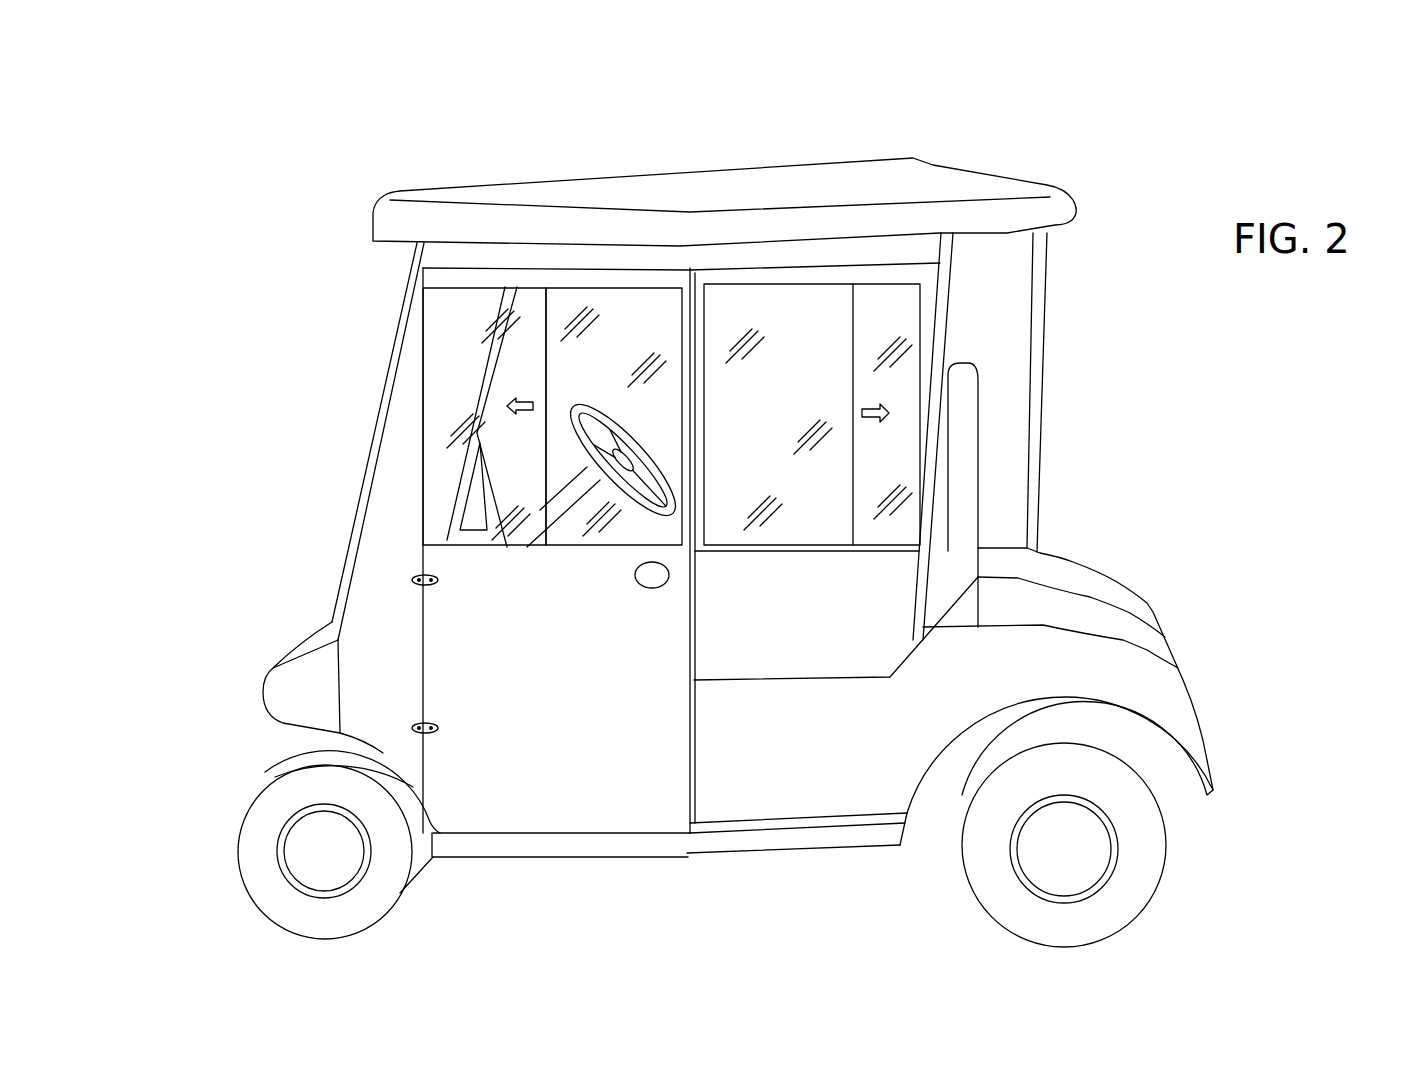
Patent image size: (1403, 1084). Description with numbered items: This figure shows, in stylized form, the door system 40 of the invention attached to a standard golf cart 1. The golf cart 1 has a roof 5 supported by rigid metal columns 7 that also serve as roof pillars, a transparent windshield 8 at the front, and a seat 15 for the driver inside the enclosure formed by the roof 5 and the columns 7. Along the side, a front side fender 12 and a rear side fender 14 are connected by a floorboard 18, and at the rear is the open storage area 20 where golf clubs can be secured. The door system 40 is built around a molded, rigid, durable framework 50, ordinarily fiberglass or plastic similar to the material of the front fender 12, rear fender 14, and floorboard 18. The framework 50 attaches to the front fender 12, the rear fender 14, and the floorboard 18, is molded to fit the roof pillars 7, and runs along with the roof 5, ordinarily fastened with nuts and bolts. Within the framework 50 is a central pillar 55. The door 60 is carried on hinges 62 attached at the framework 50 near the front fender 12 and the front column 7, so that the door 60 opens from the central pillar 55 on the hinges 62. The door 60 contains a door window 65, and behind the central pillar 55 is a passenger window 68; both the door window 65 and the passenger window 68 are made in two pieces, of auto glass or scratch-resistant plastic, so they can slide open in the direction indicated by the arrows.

The golf cart 1 is at (355, 188).
The roof 5 is at (555, 203).
The columns 7 is at (403, 307).
The windshield 8 is at (438, 397).
The front side fender 12 is at (302, 695).
The rear side fender 14 is at (1067, 660).
The seat 15 is at (957, 485).
The floorboard 18 is at (643, 843).
The open storage area 20 is at (1087, 613).
The door system 40 is at (362, 278).
The framework 50 is at (792, 257).
The central pillar 55 is at (695, 278).
The door 60 is at (522, 805).
The hinges 62 is at (417, 725).
The door window 65 is at (563, 303).
The passenger window 68 is at (888, 310).